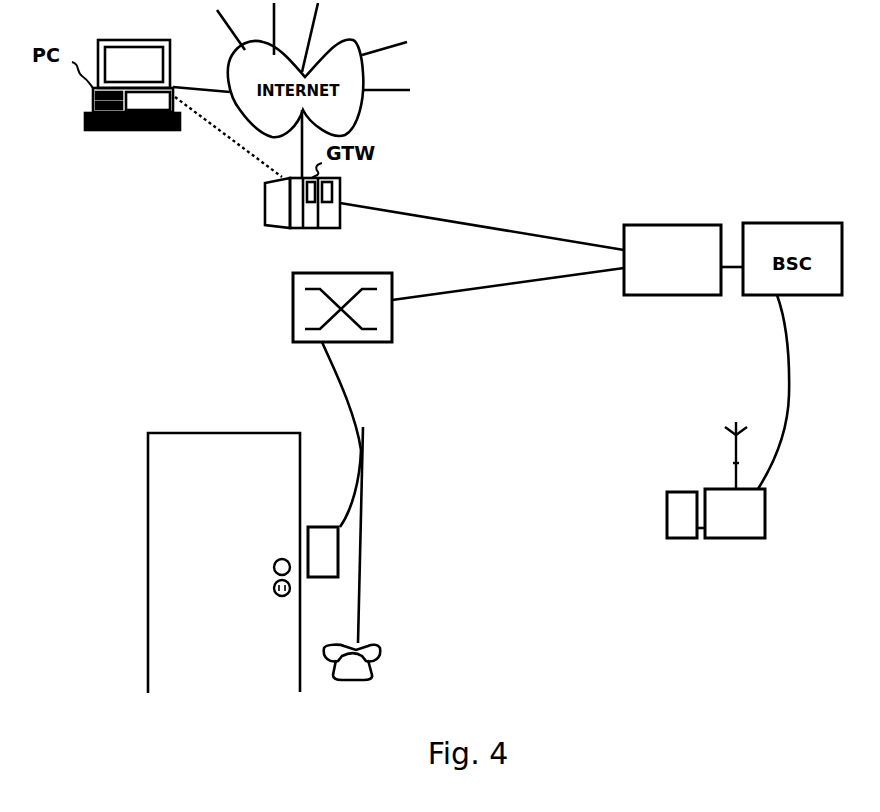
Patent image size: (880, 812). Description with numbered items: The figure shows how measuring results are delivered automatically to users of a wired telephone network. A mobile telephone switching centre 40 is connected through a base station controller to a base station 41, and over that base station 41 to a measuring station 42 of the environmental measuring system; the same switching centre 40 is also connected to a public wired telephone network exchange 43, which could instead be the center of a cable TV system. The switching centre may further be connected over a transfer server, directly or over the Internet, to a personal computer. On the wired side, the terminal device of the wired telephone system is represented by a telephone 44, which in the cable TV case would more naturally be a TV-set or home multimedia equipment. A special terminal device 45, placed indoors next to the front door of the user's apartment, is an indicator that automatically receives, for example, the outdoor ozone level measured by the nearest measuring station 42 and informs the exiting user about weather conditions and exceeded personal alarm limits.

The mobile telephone switching centre 40 is at (645, 225).
The base station 41 is at (740, 538).
The measuring station 42 is at (680, 538).
The public wired telephone network exchange 43 is at (318, 273).
The telephone 44 is at (352, 680).
The special terminal device 45 is at (320, 578).